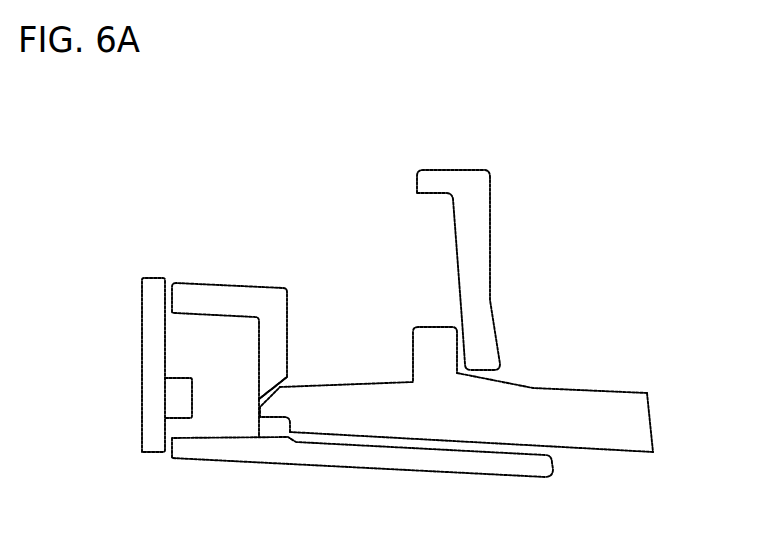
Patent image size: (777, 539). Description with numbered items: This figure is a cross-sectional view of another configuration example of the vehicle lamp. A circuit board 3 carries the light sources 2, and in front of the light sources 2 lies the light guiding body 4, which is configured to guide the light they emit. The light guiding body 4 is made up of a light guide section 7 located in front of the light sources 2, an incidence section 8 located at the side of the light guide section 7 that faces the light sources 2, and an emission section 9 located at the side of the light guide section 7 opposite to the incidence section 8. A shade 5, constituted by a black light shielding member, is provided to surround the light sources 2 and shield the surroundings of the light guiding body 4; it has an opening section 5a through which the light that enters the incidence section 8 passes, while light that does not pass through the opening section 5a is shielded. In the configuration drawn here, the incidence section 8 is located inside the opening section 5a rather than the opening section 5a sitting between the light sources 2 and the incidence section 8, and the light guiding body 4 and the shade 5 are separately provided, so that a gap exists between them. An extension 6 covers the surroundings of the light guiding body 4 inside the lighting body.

The light source 2 is at (172, 397).
The circuit board 3 is at (152, 285).
The light guiding body 4 is at (541, 364).
The shade 5 is at (227, 293).
The opening section 5a is at (242, 410).
The extension 6 is at (463, 175).
The light guide section 7 is at (618, 396).
The incidence section 8 is at (255, 413).
The emission section 9 is at (652, 422).